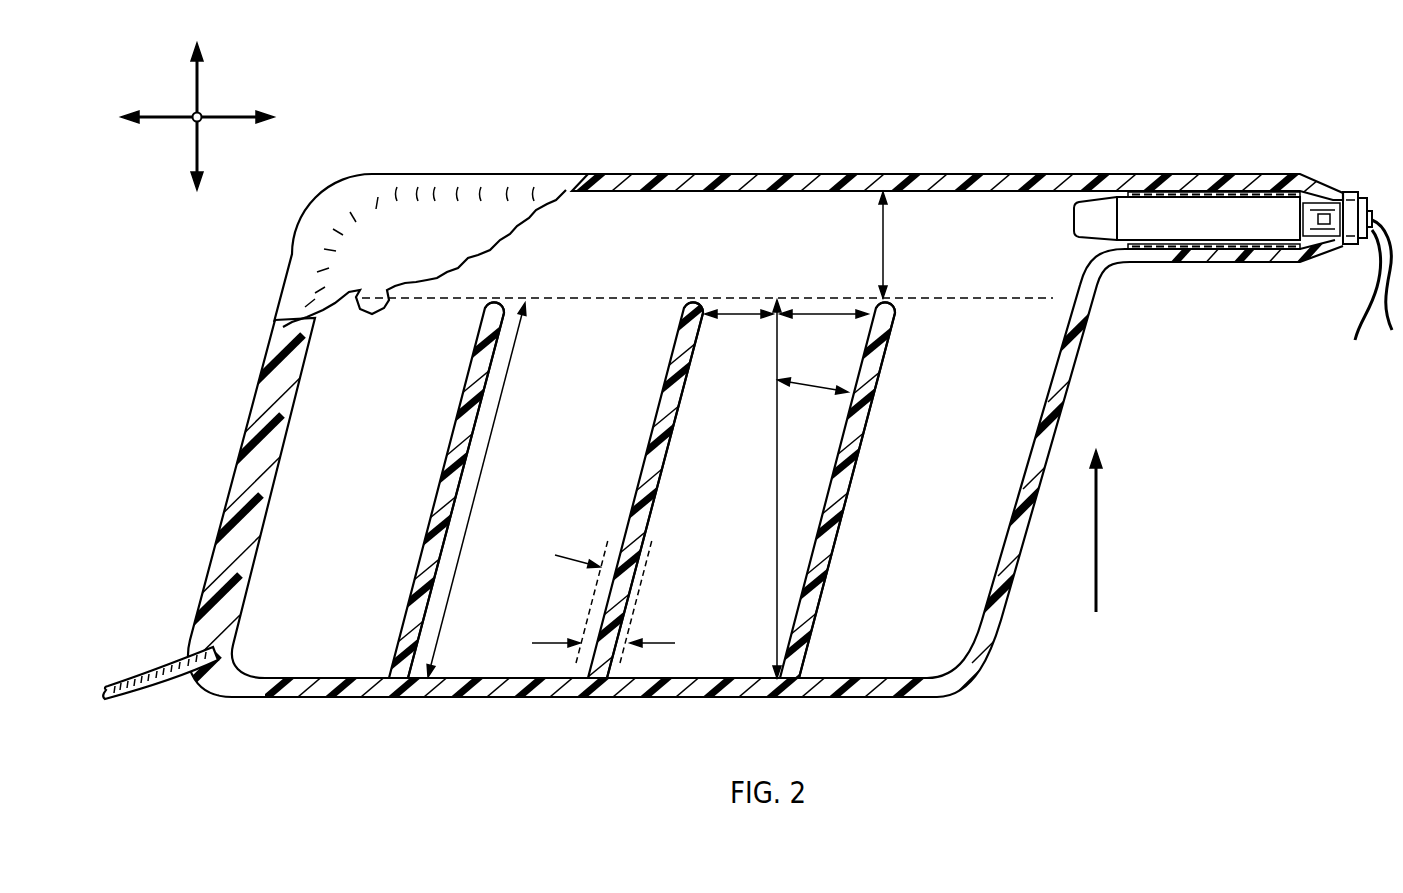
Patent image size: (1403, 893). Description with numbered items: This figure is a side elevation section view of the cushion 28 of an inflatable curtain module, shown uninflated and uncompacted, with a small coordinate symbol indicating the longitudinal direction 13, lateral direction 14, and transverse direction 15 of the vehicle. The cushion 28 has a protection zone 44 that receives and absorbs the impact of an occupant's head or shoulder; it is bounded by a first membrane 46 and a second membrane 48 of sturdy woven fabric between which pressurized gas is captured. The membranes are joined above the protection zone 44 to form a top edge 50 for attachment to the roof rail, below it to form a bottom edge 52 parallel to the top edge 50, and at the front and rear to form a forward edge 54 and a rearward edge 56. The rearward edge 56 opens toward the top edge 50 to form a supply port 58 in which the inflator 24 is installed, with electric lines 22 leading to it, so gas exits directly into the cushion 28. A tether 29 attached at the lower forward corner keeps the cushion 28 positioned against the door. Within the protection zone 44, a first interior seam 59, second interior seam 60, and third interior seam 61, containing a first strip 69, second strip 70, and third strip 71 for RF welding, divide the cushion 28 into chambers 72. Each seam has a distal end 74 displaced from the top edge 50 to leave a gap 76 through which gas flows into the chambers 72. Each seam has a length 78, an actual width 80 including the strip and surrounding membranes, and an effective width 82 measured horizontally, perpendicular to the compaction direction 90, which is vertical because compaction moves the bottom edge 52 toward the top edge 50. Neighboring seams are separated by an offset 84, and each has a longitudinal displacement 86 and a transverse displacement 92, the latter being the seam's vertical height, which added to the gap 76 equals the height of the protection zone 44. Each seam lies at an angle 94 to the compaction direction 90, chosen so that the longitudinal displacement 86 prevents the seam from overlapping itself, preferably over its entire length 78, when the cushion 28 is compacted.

The longitudinal direction 13 is at (222, 119).
The lateral direction 14 is at (194, 115).
The transverse direction 15 is at (200, 78).
The electric lines 22 is at (1390, 217).
The inflator 24 is at (1259, 210).
The cushion 28 is at (1005, 124).
The tether 29 is at (141, 673).
The protection zone 44 is at (742, 222).
The first membrane 46 is at (563, 218).
The second membrane 48 is at (352, 300).
The top edge 50 is at (634, 180).
The bottom edge 52 is at (497, 698).
The forward edge 54 is at (255, 392).
The rearward edge 56 is at (1058, 386).
The supply port 58 is at (1250, 268).
The first interior seam 59 is at (386, 606).
The second interior seam 60 is at (597, 527).
The third interior seam 61 is at (840, 583).
The first strip 69 is at (470, 415).
The second strip 70 is at (658, 438).
The third strip 71 is at (876, 380).
The chambers 72 is at (364, 490).
The distal end 74 is at (493, 302).
The gap 76 is at (886, 243).
The length 78 is at (489, 456).
The actual width 80 is at (658, 581).
The effective width 82 is at (659, 643).
The offset 84 is at (735, 312).
The longitudinal displacement 86 is at (826, 312).
The compaction direction 90 is at (1098, 543).
The transverse displacement 92 is at (778, 470).
The angle 94 is at (805, 382).